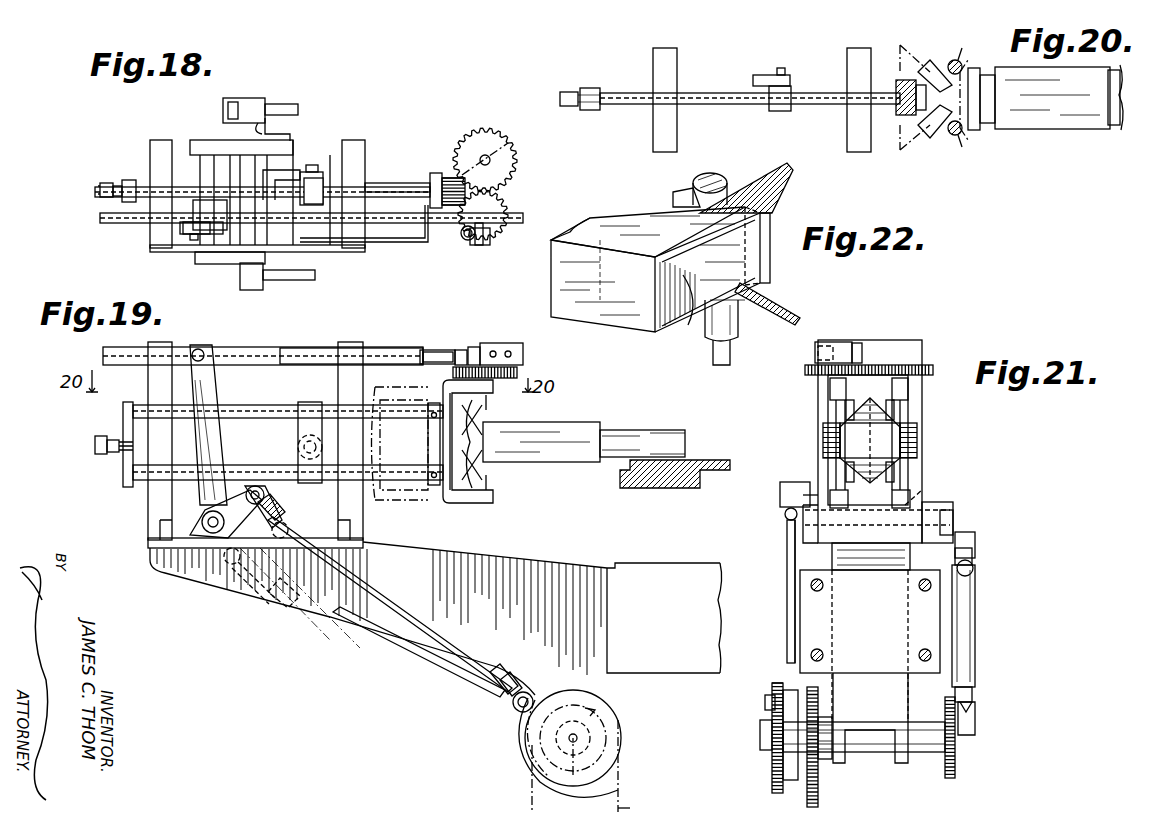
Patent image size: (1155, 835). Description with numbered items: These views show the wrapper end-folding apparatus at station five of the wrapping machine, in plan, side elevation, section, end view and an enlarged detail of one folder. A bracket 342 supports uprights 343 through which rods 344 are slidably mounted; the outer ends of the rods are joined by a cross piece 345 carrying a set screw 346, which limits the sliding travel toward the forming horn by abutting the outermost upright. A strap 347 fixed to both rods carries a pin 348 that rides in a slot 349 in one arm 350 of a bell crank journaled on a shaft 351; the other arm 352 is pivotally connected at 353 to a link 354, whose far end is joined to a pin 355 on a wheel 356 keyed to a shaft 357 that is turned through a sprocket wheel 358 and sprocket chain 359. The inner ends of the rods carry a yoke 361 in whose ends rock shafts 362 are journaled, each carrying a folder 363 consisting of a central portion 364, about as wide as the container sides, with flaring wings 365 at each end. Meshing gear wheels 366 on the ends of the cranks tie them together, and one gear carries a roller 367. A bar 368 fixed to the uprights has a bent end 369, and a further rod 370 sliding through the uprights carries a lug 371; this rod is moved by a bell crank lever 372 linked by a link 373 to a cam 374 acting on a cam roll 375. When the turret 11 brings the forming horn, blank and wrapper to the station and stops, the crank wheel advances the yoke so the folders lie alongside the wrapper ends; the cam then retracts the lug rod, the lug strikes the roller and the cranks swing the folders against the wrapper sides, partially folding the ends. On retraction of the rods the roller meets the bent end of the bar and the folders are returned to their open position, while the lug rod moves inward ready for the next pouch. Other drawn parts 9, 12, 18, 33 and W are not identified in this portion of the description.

In FIG. 19, the machine bed 9 is at (700, 648).
In FIG. 19, the turret 11 is at (705, 460).
In FIG. 19, the workpiece holder sleeve 12 is at (598, 446).
In FIG. 20, the workpiece holder sleeve 12 is at (1118, 125).
In FIG. 19, the support block 18 is at (668, 490).
In FIG. 22, the jaw member 33 is at (672, 320).
In FIG. 22, the workpiece W is at (637, 330).
In FIG. 19, the bracket 342 is at (275, 598).
In FIG. 21, the bracket 342 is at (870, 653).
In FIG. 18, the uprights 343 is at (150, 141).
In FIG. 19, the uprights 343 is at (150, 503).
In FIG. 20, the uprights 343 is at (663, 48).
In FIG. 21, the uprights 343 is at (922, 342).
In FIG. 18, the rods 344 is at (185, 186).
In FIG. 19, the rods 344 is at (243, 470).
In FIG. 20, the rods 344 is at (705, 84).
In FIG. 18, the cross piece 345 is at (126, 200).
In FIG. 19, the cross piece 345 is at (125, 464).
In FIG. 20, the cross piece 345 is at (588, 88).
In FIG. 18, the set screw 346 is at (98, 190).
In FIG. 19, the set screw 346 is at (94, 445).
In FIG. 18, the strap 347 is at (322, 190).
In FIG. 19, the strap 347 is at (312, 402).
In FIG. 20, the strap 347 is at (780, 108).
In FIG. 18, the pin 348 is at (312, 166).
In FIG. 19, the pin 348 is at (305, 440).
In FIG. 19, the slot 349 is at (300, 450).
In FIG. 18, the arm of bell crank lever 350 is at (290, 172).
In FIG. 19, the arm of bell crank lever 350 is at (284, 500).
In FIG. 18, the shaft 351 is at (266, 205).
In FIG. 19, the shaft 351 is at (288, 518).
In FIG. 21, the shaft 351 is at (922, 490).
In FIG. 18, the other arm of bell crank 352 is at (258, 126).
In FIG. 19, the other arm of bell crank 352 is at (232, 585).
In FIG. 21, the other arm of bell crank 352 is at (950, 530).
In FIG. 18, the pivotal connection 353 is at (236, 100).
In FIG. 19, the pivotal connection 353 is at (222, 582).
In FIG. 21, the pivotal connection 353 is at (975, 547).
In FIG. 19, the link 354 is at (380, 633).
In FIG. 21, the link 354 is at (975, 600).
In FIG. 19, the pin 355 is at (545, 738).
In FIG. 21, the pin 355 is at (976, 724).
In FIG. 21, the wheel 356 is at (957, 762).
In FIG. 19, the shaft 357 is at (592, 736).
In FIG. 21, the shaft 357 is at (885, 752).
In FIG. 19, the sprocket wheel 358 is at (565, 785).
In FIG. 21, the sprocket wheel 358 is at (825, 760).
In FIG. 19, the sprocket chain 359 is at (642, 768).
In FIG. 21, the sprocket chain 359 is at (818, 803).
In FIG. 18, the yoke 361 is at (436, 175).
In FIG. 19, the yoke 361 is at (475, 506).
In FIG. 20, the yoke 361 is at (968, 130).
In FIG. 21, the yoke 361 is at (905, 390).
In FIG. 18, the rock shafts 362 is at (490, 157).
In FIG. 19, the rock shafts 362 is at (494, 483).
In FIG. 20, the rock shafts 362 is at (950, 62).
In FIG. 22, the rock shafts 362 is at (714, 357).
In FIG. 21, the rock shafts 362 is at (830, 408).
In FIG. 19, the folders 363 is at (472, 432).
In FIG. 20, the folders 363 is at (920, 72).
In FIG. 22, the folders 363 is at (778, 272).
In FIG. 21, the folders 363 is at (893, 442).
In FIG. 22, the central portion 364 is at (772, 230).
In FIG. 19, the flaring wings 365 is at (468, 450).
In FIG. 22, the flaring wings 365 is at (790, 172).
In FIG. 21, the flaring wings 365 is at (846, 415).
In FIG. 18, the meshing gear wheels 366 is at (500, 192).
In FIG. 19, the meshing gear wheels 366 is at (518, 373).
In FIG. 21, the meshing gear wheels 366 is at (870, 365).
In FIG. 18, the pin or roller 367 is at (462, 238).
In FIG. 19, the pin or roller 367 is at (466, 350).
In FIG. 21, the pin or roller 367 is at (817, 353).
In FIG. 18, the bar or rod 368 is at (356, 251).
In FIG. 19, the bar or rod 368 is at (332, 350).
In FIG. 18, the bent end 369 is at (415, 236).
In FIG. 19, the bent end 369 is at (418, 356).
In FIG. 18, the rod 370 is at (382, 185).
In FIG. 19, the rod 370 is at (268, 337).
In FIG. 21, the rod 370 is at (857, 343).
In FIG. 18, the projection or lug 371 is at (481, 246).
In FIG. 19, the projection or lug 371 is at (488, 344).
In FIG. 21, the projection or lug 371 is at (838, 342).
In FIG. 18, the bell crank lever 372 is at (185, 232).
In FIG. 19, the bell crank lever 372 is at (192, 380).
In FIG. 21, the bell crank lever 372 is at (787, 512).
In FIG. 18, the link 373 is at (300, 280).
In FIG. 19, the link 373 is at (385, 588).
In FIG. 21, the link 373 is at (787, 600).
In FIG. 19, the cam 374 is at (535, 774).
In FIG. 21, the cam 374 is at (772, 785).
In FIG. 19, the cam roll 375 is at (515, 708).
In FIG. 21, the cam roll 375 is at (765, 717).